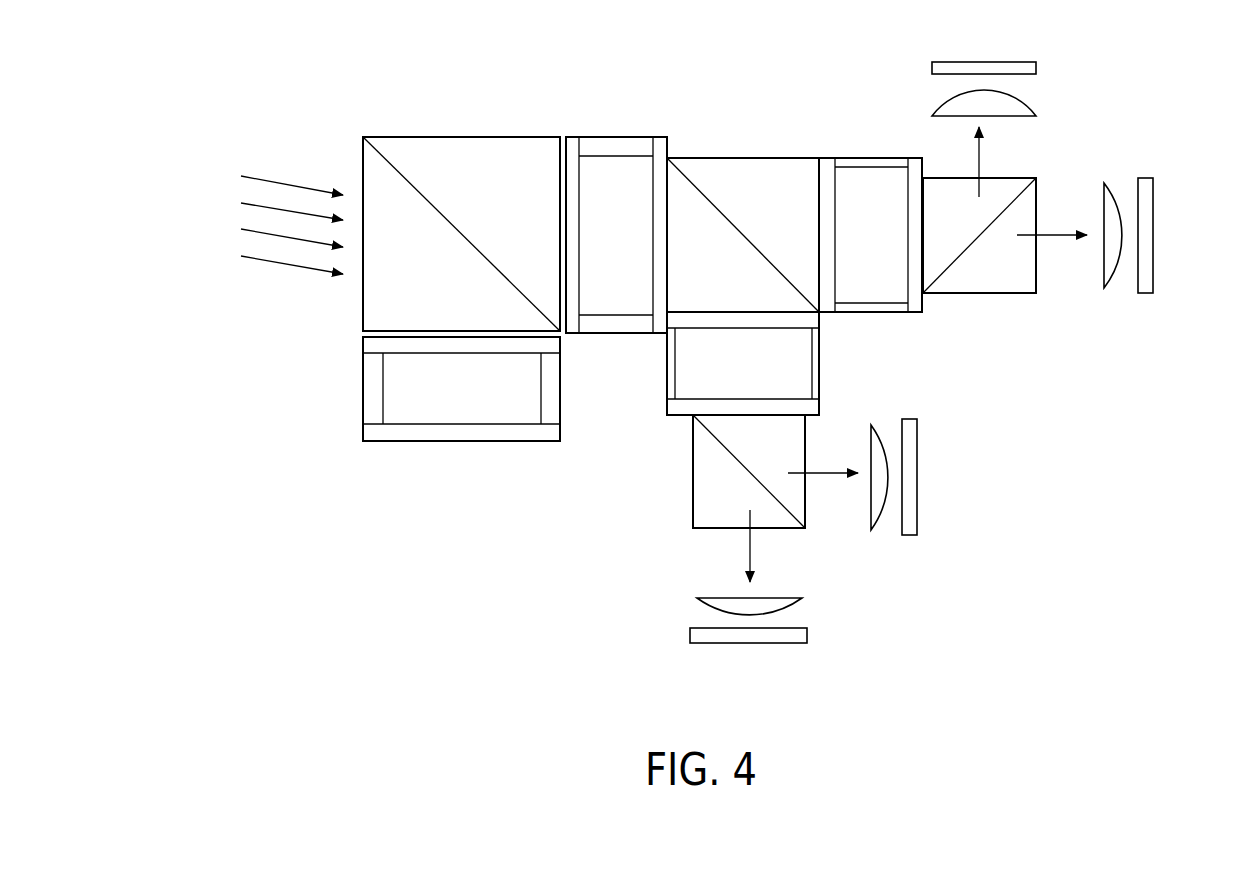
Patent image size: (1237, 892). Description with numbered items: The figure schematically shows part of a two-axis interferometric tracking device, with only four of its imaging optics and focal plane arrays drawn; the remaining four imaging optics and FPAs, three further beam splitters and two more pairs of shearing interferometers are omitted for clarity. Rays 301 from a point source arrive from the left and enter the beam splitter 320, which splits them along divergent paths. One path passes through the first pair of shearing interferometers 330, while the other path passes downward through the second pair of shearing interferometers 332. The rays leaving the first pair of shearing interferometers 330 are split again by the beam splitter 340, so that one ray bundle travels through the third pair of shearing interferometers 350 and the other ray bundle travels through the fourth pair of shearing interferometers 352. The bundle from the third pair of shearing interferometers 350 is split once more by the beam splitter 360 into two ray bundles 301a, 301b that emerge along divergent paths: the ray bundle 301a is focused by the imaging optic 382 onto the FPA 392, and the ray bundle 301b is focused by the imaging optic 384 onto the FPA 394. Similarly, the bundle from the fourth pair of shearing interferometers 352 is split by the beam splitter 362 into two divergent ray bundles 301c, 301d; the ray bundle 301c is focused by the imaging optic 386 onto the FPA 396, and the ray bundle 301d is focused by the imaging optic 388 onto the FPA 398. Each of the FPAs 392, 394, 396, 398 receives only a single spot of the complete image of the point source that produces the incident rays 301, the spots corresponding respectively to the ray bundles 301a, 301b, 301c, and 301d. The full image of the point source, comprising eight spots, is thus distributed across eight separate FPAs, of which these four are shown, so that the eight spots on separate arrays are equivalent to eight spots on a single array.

The rays 301 is at (268, 225).
The ray bundle 301a is at (980, 160).
The ray bundle 301b is at (1050, 232).
The ray bundle 301c is at (822, 470).
The ray bundle 301d is at (750, 553).
The beam splitter 320 is at (462, 137).
The first pair of shearing interferometers 330 is at (622, 137).
The second pair of shearing interferometers 332 is at (363, 396).
The beam splitter 340 is at (760, 158).
The third pair of shearing interferometers 350 is at (870, 158).
The fourth pair of shearing interferometers 352 is at (819, 363).
The beam splitter 360 is at (990, 293).
The beam splitter 362 is at (693, 478).
The imaging optic 382 is at (1036, 100).
The imaging optic 384 is at (1110, 288).
The imaging optic 386 is at (880, 527).
The imaging optic 388 is at (697, 601).
The FPA 392 is at (1036, 68).
The FPA 394 is at (1147, 293).
The FPA 396 is at (918, 508).
The FPA 398 is at (690, 634).